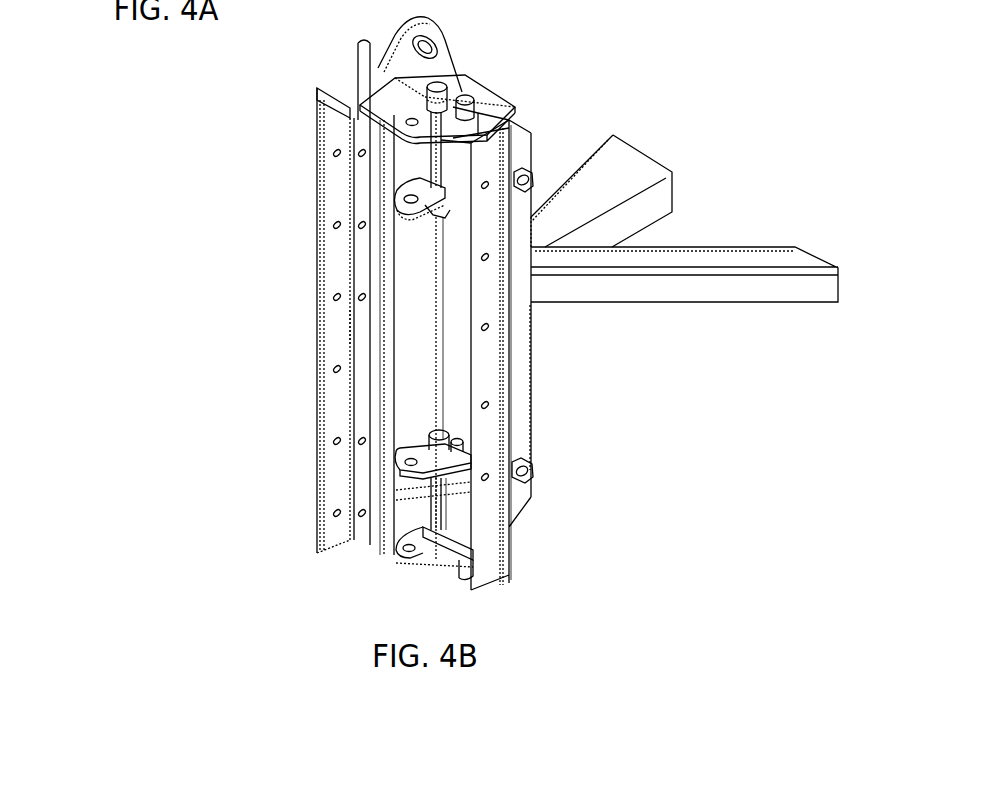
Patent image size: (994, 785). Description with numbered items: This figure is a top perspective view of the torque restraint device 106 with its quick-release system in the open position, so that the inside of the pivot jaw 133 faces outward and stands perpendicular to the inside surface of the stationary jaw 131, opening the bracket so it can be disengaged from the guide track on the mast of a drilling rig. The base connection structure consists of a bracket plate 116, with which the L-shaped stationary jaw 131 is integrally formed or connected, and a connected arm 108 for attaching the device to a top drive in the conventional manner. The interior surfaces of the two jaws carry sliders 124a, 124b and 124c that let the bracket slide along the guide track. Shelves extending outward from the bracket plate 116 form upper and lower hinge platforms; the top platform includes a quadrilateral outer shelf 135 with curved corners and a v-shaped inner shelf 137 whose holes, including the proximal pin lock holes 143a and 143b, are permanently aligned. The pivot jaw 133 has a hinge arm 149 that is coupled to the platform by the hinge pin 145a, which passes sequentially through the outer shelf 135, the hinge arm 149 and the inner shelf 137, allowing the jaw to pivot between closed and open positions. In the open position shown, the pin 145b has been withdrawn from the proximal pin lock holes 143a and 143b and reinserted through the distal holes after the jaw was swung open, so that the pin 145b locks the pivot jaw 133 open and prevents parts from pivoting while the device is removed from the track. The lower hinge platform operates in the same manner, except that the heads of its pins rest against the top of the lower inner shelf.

The torque restraint device 106 is at (610, 391).
The arm 108 is at (633, 167).
The bracket plate 116 is at (380, 72).
The slider 124a is at (350, 327).
The slider 124b is at (487, 424).
The slider 124c is at (357, 383).
The stationary jaw 131 is at (313, 110).
The pivot jaw 133 is at (508, 518).
The outer shelf 135 is at (400, 82).
The inner shelf 137 is at (428, 215).
The proximal pin lock hole 143a is at (410, 117).
The proximal pin lock hole 143b is at (400, 198).
The hinge pin 145a is at (443, 98).
The pin 145b is at (467, 100).
The hinge arm 149 is at (453, 165).